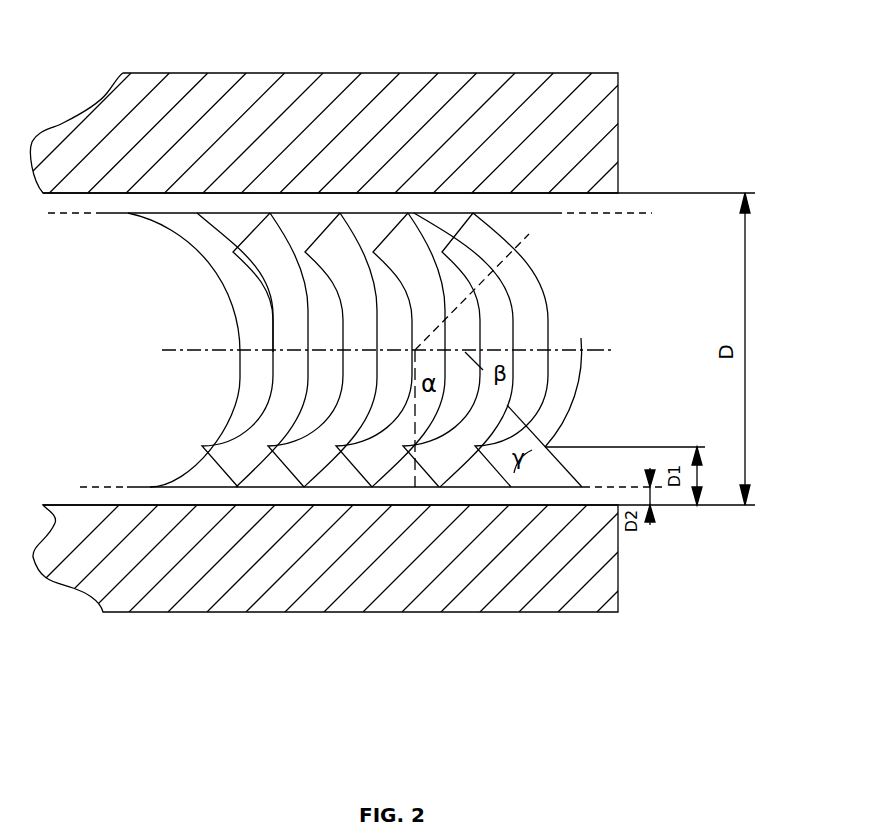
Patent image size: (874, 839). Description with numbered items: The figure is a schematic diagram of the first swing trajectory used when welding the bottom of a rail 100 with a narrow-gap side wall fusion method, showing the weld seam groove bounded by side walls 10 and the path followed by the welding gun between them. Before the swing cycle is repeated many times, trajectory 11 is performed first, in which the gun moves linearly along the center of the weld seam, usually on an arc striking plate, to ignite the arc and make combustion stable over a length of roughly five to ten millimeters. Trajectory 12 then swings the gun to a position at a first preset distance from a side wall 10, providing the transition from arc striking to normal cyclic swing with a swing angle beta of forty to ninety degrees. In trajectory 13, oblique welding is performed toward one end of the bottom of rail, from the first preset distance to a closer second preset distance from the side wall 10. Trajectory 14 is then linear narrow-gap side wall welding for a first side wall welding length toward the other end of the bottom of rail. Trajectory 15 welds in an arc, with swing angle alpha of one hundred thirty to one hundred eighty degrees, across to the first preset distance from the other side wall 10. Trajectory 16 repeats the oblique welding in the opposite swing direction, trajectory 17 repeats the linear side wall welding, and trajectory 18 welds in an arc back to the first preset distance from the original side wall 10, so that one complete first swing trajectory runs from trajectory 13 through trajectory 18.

The rail 100 is at (403, 98).
The side wall 10 is at (468, 193).
The trajectory 11 is at (614, 350).
The trajectory 12 is at (559, 428).
The trajectory 13 is at (571, 475).
The trajectory 14 is at (491, 487).
The trajectory 15 is at (548, 351).
The trajectory 16 is at (547, 215).
The trajectory 17 is at (472, 213).
The trajectory 18 is at (512, 334).